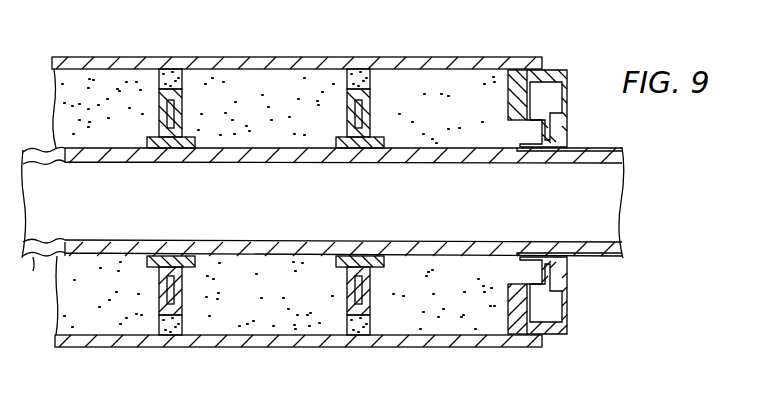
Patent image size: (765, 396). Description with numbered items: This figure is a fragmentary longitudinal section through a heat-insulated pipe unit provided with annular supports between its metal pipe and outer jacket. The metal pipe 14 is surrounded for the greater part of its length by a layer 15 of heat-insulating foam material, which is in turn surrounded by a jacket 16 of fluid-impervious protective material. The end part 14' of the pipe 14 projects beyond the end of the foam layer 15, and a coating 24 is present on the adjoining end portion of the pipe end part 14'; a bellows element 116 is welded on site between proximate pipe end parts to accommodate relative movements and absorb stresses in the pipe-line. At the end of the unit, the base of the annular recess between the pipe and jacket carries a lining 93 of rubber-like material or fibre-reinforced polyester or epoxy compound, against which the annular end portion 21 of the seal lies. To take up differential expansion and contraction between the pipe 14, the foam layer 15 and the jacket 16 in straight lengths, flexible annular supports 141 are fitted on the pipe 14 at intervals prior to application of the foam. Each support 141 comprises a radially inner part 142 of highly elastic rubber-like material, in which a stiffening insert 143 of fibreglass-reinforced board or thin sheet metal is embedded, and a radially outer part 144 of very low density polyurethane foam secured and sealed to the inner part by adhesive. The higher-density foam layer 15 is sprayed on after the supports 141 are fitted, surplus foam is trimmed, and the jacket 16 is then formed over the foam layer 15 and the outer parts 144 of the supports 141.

The jacket 16 is at (104, 60).
The layer of heat-insulating foam material 15 is at (66, 114).
The metal pipe 14 is at (323, 202).
The end part of pipe 14' is at (421, 187).
The coating 24 is at (597, 152).
The bellows element 116 is at (35, 257).
The flexible annular support 141 is at (151, 106).
The radially outer part 144 is at (176, 74).
The stiffening insert 143 is at (174, 122).
The radially inner part 142 is at (372, 112).
The lining 93 is at (513, 80).
The annular end portion 21 is at (542, 76).